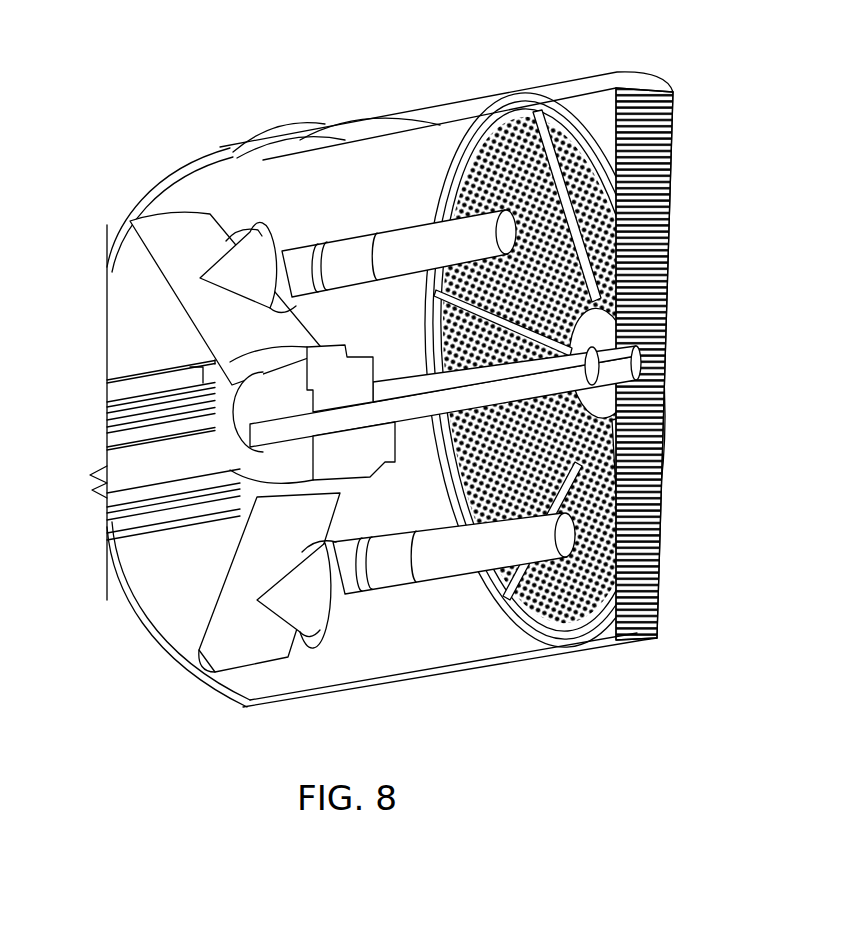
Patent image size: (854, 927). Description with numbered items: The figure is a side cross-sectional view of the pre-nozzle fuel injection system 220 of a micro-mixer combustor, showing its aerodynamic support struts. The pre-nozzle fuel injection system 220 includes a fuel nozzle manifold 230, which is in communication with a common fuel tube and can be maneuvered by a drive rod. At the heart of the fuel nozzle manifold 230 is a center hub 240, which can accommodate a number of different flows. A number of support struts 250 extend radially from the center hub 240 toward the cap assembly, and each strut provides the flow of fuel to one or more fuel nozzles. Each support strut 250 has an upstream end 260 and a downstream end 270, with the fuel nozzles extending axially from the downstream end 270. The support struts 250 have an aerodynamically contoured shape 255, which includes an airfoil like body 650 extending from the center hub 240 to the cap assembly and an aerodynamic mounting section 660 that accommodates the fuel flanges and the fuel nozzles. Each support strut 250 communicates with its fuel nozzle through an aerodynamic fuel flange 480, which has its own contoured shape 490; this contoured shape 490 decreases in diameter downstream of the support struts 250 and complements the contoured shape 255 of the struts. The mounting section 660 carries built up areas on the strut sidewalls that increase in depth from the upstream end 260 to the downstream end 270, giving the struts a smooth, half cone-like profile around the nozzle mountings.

The pre-nozzle fuel injection system 220 is at (619, 61).
The fuel nozzle manifold 230 is at (289, 432).
The center hub 240 is at (226, 497).
The support struts 250 is at (186, 232).
The aerodynamically contoured shape 255 is at (140, 268).
The upstream end 260 is at (193, 653).
The downstream end 270 is at (270, 643).
The aerodynamic fuel flange 480 is at (277, 246).
The contoured shape 490 is at (337, 243).
The airfoil like body 650 is at (210, 607).
The aerodynamic mounting section 660 is at (304, 615).